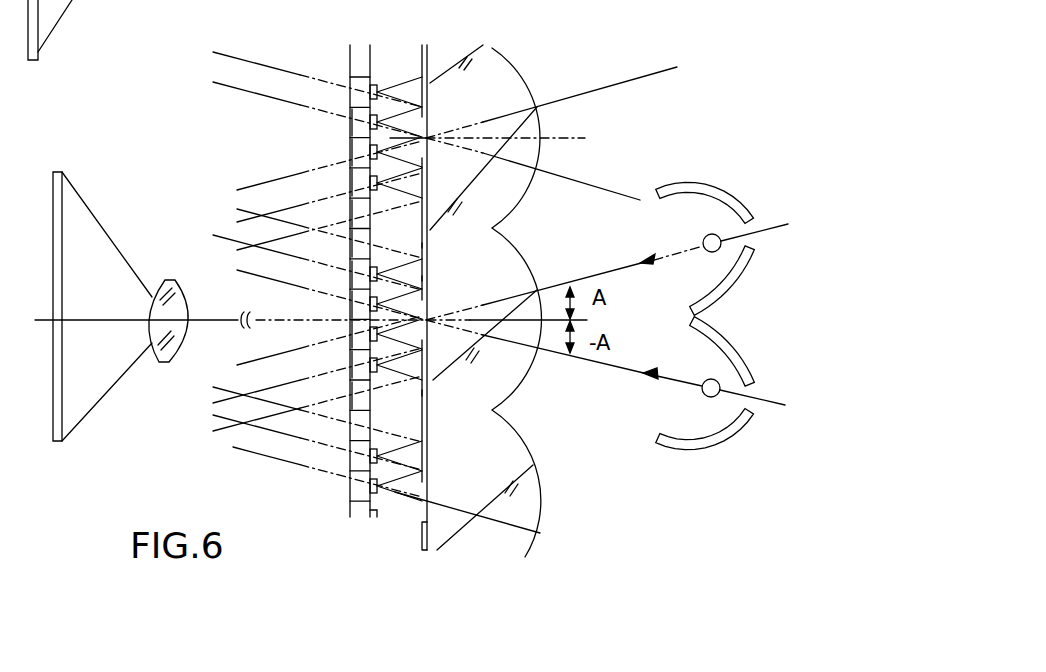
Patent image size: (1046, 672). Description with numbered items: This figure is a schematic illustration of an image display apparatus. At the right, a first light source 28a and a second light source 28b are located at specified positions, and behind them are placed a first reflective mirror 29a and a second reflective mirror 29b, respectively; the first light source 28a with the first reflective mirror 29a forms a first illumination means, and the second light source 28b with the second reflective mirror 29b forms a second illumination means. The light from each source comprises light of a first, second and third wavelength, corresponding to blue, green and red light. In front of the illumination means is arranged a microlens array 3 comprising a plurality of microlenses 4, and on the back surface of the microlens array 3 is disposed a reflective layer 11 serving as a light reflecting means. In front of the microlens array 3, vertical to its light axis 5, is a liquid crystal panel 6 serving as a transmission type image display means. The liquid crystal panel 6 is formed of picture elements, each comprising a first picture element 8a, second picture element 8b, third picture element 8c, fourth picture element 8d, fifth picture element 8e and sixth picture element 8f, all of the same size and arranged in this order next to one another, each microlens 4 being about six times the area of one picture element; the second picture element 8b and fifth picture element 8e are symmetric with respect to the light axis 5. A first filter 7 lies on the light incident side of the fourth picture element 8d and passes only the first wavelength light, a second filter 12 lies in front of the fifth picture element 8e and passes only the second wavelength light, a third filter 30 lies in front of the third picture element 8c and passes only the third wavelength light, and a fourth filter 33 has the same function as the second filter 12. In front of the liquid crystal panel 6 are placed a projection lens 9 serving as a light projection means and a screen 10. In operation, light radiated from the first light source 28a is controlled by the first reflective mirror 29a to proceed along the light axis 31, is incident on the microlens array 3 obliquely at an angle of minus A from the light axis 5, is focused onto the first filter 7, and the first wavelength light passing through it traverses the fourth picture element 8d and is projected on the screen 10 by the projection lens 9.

The microlens array 3 is at (447, 70).
The microlens 4 is at (518, 70).
The light axis 5 is at (585, 138).
The liquid crystal panel 6 is at (372, 528).
The first filter 7 is at (429, 278).
The first picture element 8a is at (350, 210).
The second picture element 8b is at (350, 178).
The third picture element 8c is at (350, 148).
The fourth picture element 8d is at (350, 125).
The fifth picture element 8e is at (350, 273).
The sixth picture element 8f is at (350, 243).
The projection lens 9 is at (168, 362).
The screen 10 is at (63, 432).
The reflective layer 11 is at (432, 183).
The second filter 12 is at (424, 245).
The first light source 28a is at (702, 393).
The second light source 28b is at (716, 235).
The first reflective mirror 29a is at (690, 447).
The second reflective mirror 29b is at (690, 188).
The third filter 30 is at (431, 362).
The light axis 31 is at (777, 406).
The fourth filter 33 is at (429, 393).